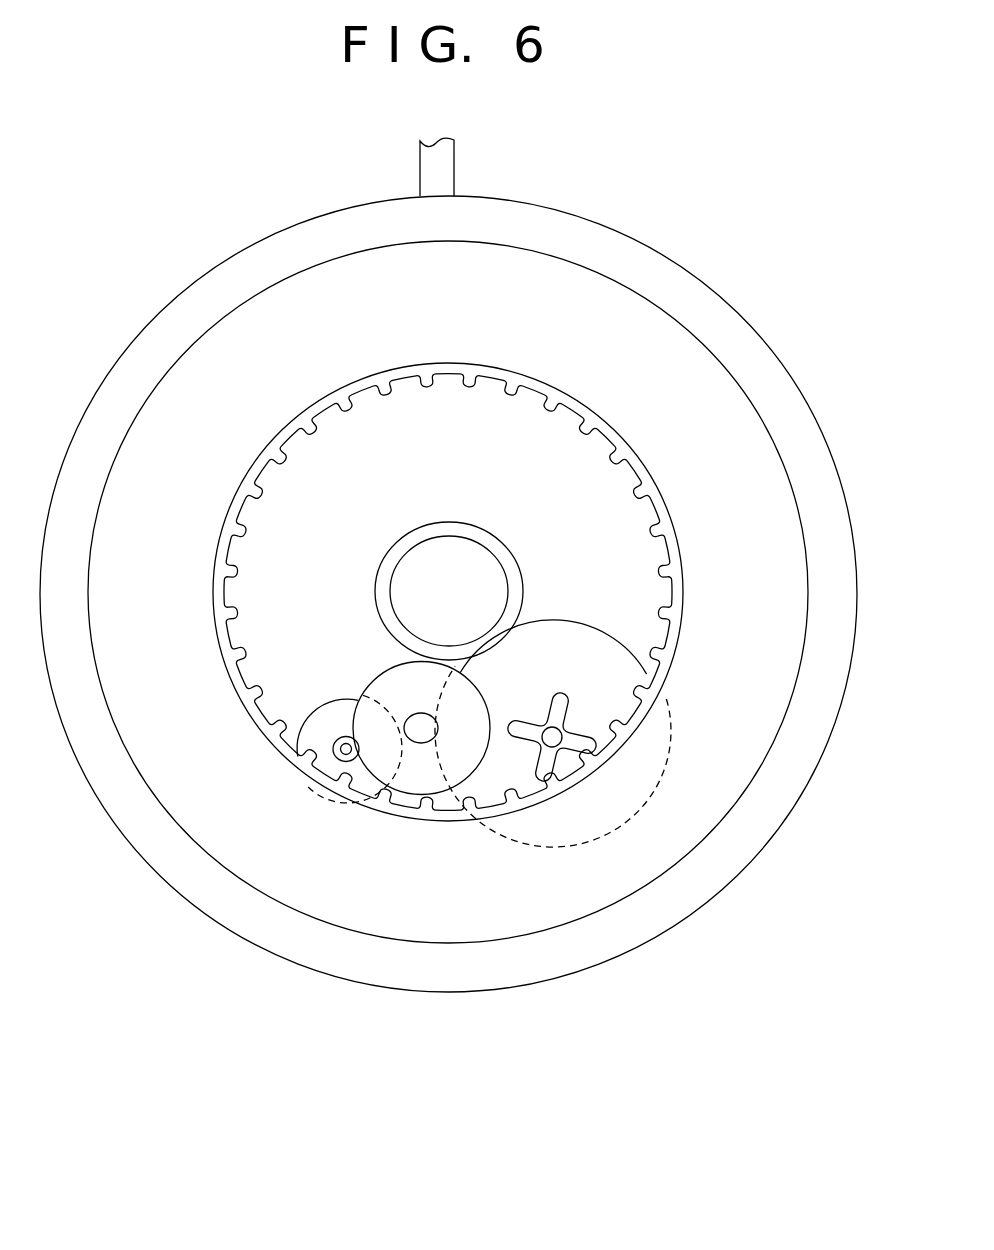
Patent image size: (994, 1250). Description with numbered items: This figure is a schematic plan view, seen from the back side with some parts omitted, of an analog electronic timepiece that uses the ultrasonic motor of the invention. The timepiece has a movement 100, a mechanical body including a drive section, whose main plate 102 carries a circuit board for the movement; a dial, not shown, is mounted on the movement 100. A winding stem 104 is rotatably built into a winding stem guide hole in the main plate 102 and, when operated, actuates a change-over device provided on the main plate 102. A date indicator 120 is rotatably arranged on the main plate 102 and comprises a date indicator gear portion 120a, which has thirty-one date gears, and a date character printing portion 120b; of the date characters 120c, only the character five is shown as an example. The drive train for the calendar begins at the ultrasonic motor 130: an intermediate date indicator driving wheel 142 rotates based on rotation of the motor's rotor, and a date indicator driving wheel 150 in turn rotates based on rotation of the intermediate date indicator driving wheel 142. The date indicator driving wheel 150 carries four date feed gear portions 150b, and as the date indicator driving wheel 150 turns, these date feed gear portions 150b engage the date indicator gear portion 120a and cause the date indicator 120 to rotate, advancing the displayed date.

The movement 100 is at (293, 198).
The main plate 102 is at (183, 312).
The winding stem 104 is at (443, 162).
The date indicator 120 is at (593, 318).
The date indicator gear portion 120a is at (597, 427).
The date character printing portion 120b is at (728, 447).
The date characters 120c is at (768, 565).
The ultrasonic motor 130 is at (318, 747).
The intermediate date indicator driving wheel 142 is at (423, 778).
The date indicator driving wheel 150 is at (508, 780).
The date feed gear portions 150b is at (593, 757).